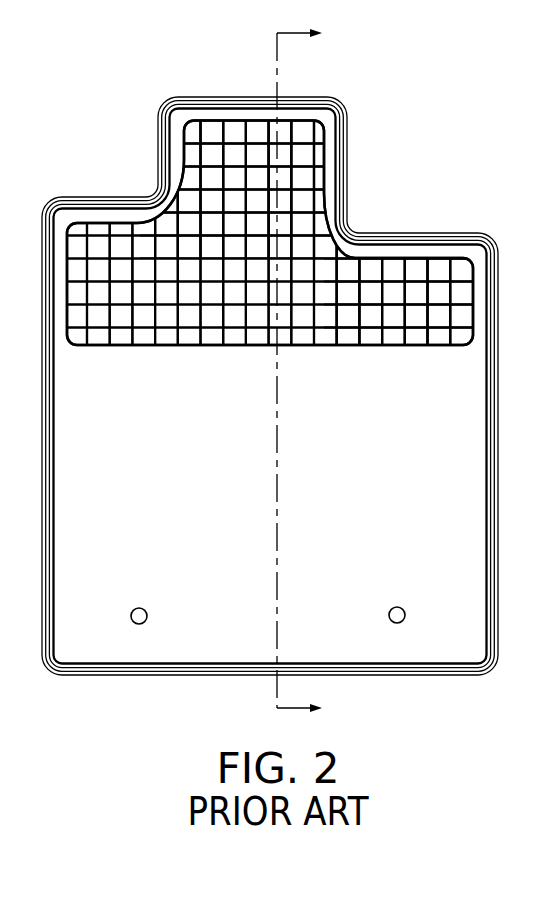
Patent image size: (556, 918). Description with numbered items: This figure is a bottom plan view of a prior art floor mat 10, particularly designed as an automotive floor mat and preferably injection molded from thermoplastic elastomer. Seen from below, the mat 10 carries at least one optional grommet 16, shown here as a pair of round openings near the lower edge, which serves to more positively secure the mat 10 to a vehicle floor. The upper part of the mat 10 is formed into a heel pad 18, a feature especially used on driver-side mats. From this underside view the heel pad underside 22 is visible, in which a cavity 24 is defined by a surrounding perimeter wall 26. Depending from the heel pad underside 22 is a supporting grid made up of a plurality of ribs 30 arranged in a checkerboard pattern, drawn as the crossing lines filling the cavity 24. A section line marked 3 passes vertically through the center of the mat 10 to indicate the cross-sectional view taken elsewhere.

The floor mat 10 is at (129, 143).
The grommet 16 is at (397, 623).
The heel pad 18 is at (438, 323).
The heel pad underside 22 is at (375, 313).
The cavity 24 is at (370, 273).
The perimeter wall 26 is at (305, 248).
The ribs 30 is at (237, 290).
The section line 3- 3 is at (309, 374).